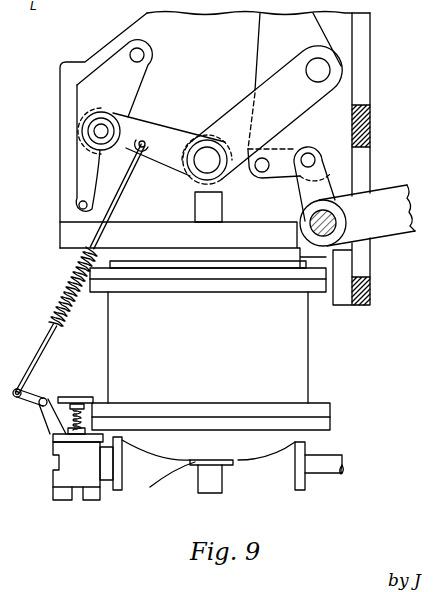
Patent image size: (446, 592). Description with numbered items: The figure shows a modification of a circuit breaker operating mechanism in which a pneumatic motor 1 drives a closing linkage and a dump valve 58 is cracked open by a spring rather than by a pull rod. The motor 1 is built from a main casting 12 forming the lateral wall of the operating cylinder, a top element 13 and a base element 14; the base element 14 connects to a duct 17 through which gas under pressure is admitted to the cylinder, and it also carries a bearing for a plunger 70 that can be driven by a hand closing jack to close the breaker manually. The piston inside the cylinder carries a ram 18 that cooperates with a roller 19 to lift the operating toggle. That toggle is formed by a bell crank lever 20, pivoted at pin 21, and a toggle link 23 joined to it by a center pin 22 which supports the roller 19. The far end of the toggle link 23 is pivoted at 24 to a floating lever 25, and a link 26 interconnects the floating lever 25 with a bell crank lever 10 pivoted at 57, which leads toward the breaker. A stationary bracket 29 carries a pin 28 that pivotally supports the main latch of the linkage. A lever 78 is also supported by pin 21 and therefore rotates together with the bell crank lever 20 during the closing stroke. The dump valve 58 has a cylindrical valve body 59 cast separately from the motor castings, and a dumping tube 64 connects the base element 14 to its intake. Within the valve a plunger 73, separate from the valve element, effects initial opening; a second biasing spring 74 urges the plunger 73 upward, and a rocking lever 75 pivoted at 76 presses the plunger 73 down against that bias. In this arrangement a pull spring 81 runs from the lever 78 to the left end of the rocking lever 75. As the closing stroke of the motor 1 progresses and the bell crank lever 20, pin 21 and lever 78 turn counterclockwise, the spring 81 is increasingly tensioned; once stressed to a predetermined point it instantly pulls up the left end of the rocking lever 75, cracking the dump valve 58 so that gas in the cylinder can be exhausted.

The motor 1 is at (208, 347).
The bell crank lever 10 is at (388, 221).
The main casting 12 is at (305, 350).
The top element 13 is at (291, 281).
The base element 14 is at (239, 463).
The duct 17 is at (319, 474).
The ram or plunger 18 is at (196, 200).
The roller 19 is at (233, 176).
The bell crank lever 20 is at (76, 186).
The pin 21 is at (94, 132).
The pin 22 is at (213, 154).
The toggle link 23 is at (245, 108).
The pivot 24 is at (311, 75).
The floating lever 25 is at (261, 25).
The link 26 is at (289, 172).
The pin 28 is at (146, 55).
The stationary bracket 29 is at (108, 58).
The pivot 57 is at (333, 223).
The dump valve 58 is at (42, 469).
The valve body 59 is at (77, 485).
The dumping tube 64 is at (108, 481).
The plunger 70 is at (198, 488).
The plunger 73 is at (83, 406).
The second biasing spring 74 is at (58, 425).
The rocking lever 75 is at (68, 398).
The pivot 76 is at (44, 397).
The lever 78 is at (137, 128).
The pull spring 81 is at (70, 278).